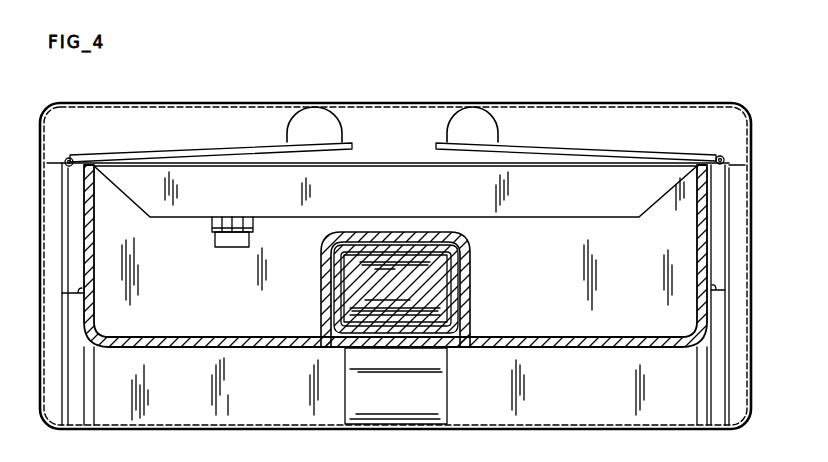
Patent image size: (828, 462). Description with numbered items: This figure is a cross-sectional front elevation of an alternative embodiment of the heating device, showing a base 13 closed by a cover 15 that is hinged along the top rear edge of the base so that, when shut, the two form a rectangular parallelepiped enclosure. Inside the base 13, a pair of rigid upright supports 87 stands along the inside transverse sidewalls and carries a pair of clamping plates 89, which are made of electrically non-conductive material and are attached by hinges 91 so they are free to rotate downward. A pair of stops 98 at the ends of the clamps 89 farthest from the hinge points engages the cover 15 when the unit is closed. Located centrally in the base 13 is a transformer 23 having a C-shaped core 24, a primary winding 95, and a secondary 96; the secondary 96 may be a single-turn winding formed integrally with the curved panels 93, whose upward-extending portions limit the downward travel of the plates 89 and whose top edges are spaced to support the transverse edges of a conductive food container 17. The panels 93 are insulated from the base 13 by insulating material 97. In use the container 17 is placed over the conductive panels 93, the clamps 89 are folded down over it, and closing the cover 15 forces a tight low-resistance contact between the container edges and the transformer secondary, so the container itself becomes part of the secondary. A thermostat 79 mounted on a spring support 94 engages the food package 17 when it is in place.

The base 13 is at (752, 325).
The cover 15 is at (730, 104).
The food container 17 is at (395, 190).
The transformer 23 is at (562, 301).
The C-shaped core 24 is at (428, 278).
The thermostat 79 is at (253, 227).
The rigid upright supports 87 is at (54, 368).
The clamping plates 89 is at (198, 150).
The hinges 91 is at (70, 157).
The curved panels 93 is at (204, 343).
The spring support 94 is at (220, 248).
The primary winding 95 is at (405, 250).
The secondary 96 is at (470, 305).
The insulating material 97 is at (64, 293).
The stops 98 is at (342, 129).